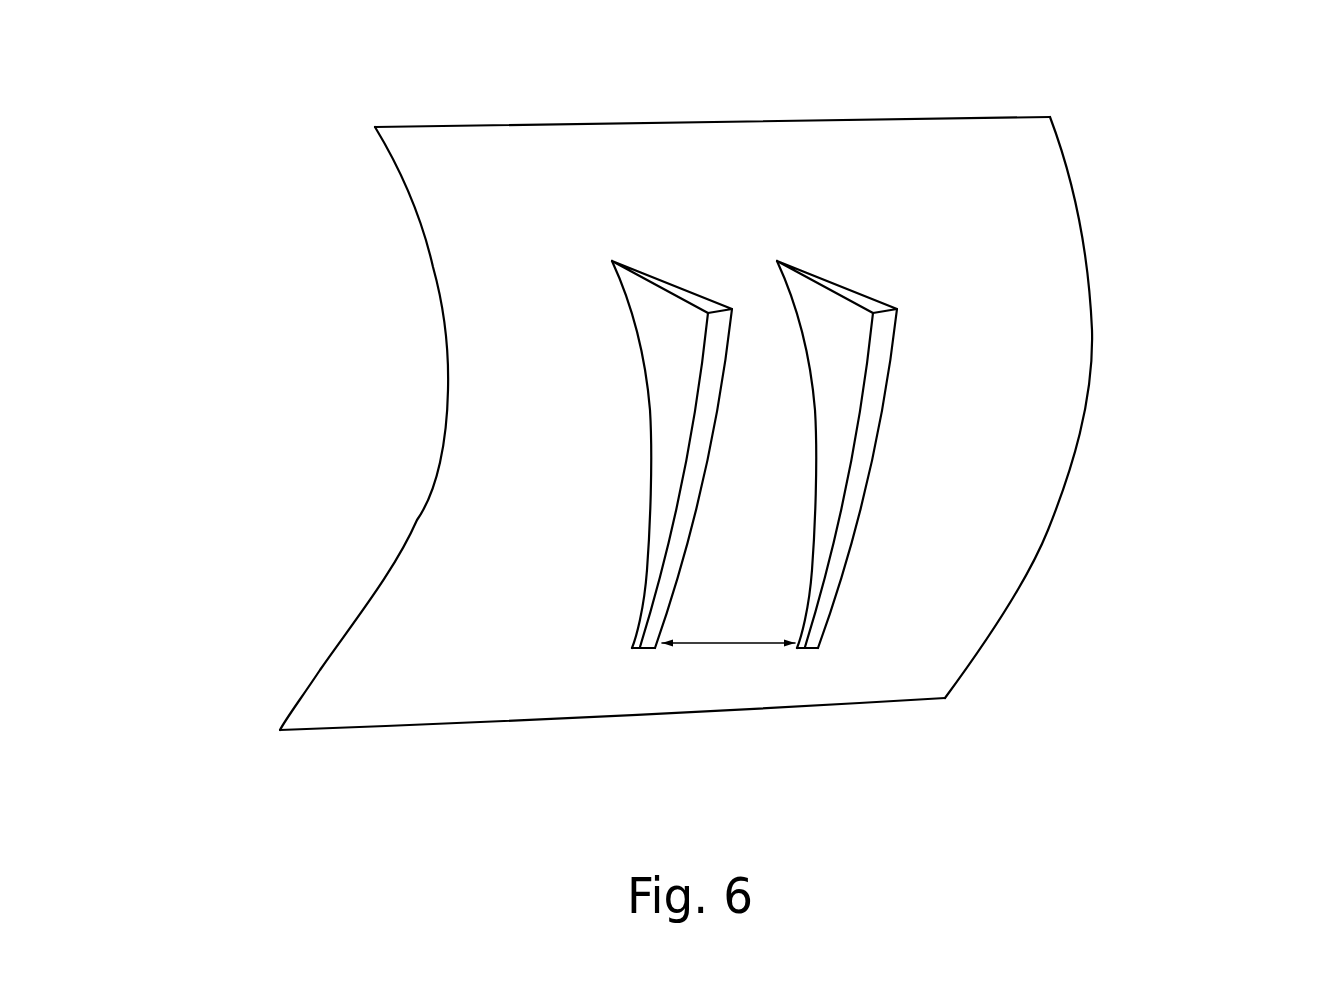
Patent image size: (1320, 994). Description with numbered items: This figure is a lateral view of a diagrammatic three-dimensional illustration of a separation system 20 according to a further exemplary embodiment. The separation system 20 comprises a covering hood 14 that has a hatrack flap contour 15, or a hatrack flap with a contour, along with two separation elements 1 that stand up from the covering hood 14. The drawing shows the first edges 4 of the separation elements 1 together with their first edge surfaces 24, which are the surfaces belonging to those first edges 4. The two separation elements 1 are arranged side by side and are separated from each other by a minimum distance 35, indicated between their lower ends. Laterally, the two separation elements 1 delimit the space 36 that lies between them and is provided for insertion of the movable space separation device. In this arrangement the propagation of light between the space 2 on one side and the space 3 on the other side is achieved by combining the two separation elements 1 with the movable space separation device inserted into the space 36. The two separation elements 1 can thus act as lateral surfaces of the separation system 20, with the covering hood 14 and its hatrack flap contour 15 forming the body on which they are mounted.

The separation system 20 is at (262, 104).
The covering hood 14 is at (1022, 482).
The hatrack flap contour 15 is at (1058, 393).
The space 2 is at (292, 387).
The space 3 is at (1160, 463).
The separation element 1 is at (648, 260).
The first edge 4 is at (659, 266).
The first edge surface 24 is at (622, 260).
The space 36 is at (765, 503).
The minimum distance 35 is at (733, 645).